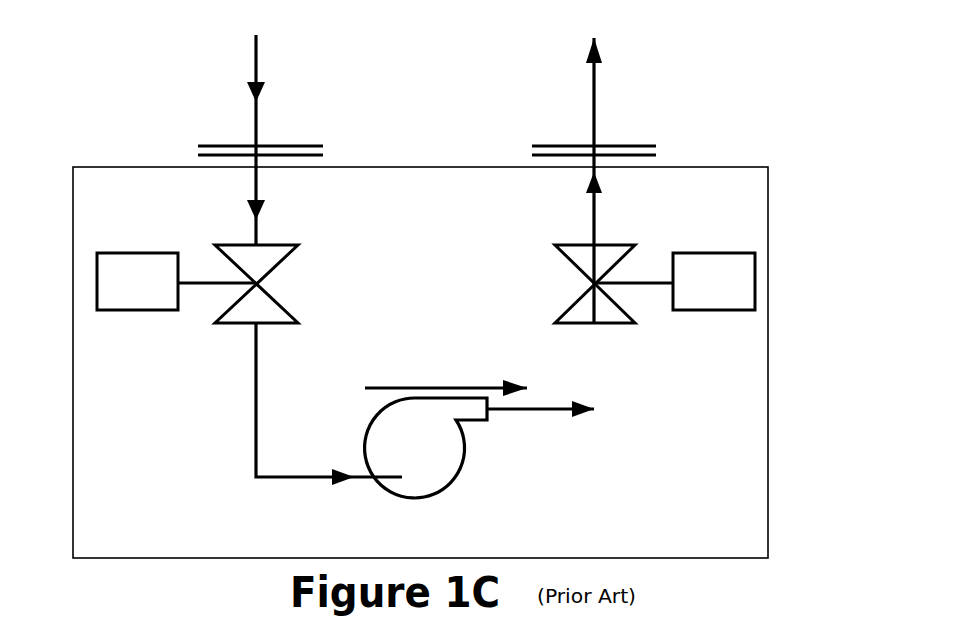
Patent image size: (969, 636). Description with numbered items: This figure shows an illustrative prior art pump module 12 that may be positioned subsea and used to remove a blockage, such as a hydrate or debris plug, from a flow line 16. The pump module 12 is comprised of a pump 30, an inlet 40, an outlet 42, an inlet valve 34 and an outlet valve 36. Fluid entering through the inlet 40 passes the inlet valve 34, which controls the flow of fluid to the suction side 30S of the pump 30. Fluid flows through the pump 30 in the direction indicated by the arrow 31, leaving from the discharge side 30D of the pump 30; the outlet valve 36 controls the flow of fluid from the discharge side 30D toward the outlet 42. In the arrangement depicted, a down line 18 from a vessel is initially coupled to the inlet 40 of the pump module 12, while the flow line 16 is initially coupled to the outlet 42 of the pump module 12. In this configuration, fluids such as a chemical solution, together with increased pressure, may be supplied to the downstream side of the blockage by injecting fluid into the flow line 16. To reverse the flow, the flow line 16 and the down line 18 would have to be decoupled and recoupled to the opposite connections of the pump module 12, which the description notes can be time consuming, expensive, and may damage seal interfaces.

The pump module 12 is at (98, 167).
The flow line 16 is at (597, 102).
The down line 18 is at (258, 107).
The pump 30 is at (405, 418).
The discharge side 30D is at (508, 412).
The suction side 30S is at (358, 478).
The arrow 31 is at (428, 385).
The inlet valve 34 is at (310, 259).
The outlet valve 36 is at (540, 251).
The inlet 40 is at (293, 157).
The outlet 42 is at (632, 156).